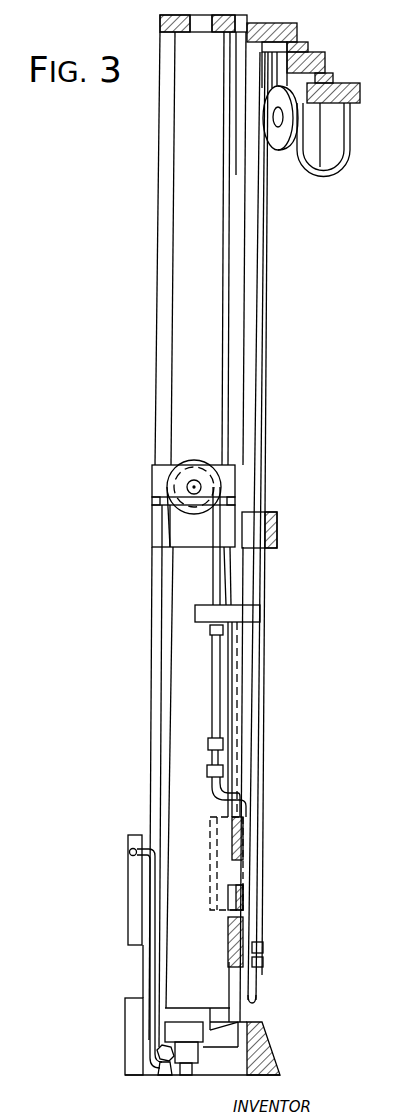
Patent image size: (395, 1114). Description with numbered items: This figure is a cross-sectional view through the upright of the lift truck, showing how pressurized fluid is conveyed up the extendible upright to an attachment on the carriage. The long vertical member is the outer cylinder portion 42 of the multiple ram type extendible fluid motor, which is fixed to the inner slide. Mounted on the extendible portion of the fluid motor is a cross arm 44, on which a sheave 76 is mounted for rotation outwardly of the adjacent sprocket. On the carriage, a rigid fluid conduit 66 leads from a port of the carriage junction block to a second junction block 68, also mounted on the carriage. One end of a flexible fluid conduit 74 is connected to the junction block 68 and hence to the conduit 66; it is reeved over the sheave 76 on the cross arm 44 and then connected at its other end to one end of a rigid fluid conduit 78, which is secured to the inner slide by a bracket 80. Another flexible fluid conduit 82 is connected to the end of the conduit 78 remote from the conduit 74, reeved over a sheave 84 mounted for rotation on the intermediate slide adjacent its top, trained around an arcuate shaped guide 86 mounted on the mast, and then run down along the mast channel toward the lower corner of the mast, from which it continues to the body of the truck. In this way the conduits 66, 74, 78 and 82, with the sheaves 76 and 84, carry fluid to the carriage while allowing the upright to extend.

The outer cylinder portion 42 is at (185, 583).
The cross arm 44 is at (162, 480).
The rigid fluid conduit 66 is at (145, 975).
The junction block 68 is at (153, 1075).
The flexible fluid conduit 74 is at (217, 595).
The sheave 76 is at (182, 468).
The rigid fluid conduit 78 is at (240, 795).
The bracket 80 is at (242, 893).
The flexible fluid conduit 82 is at (268, 303).
The sheave 84 is at (280, 135).
The arcuate shaped guide 86 is at (330, 172).